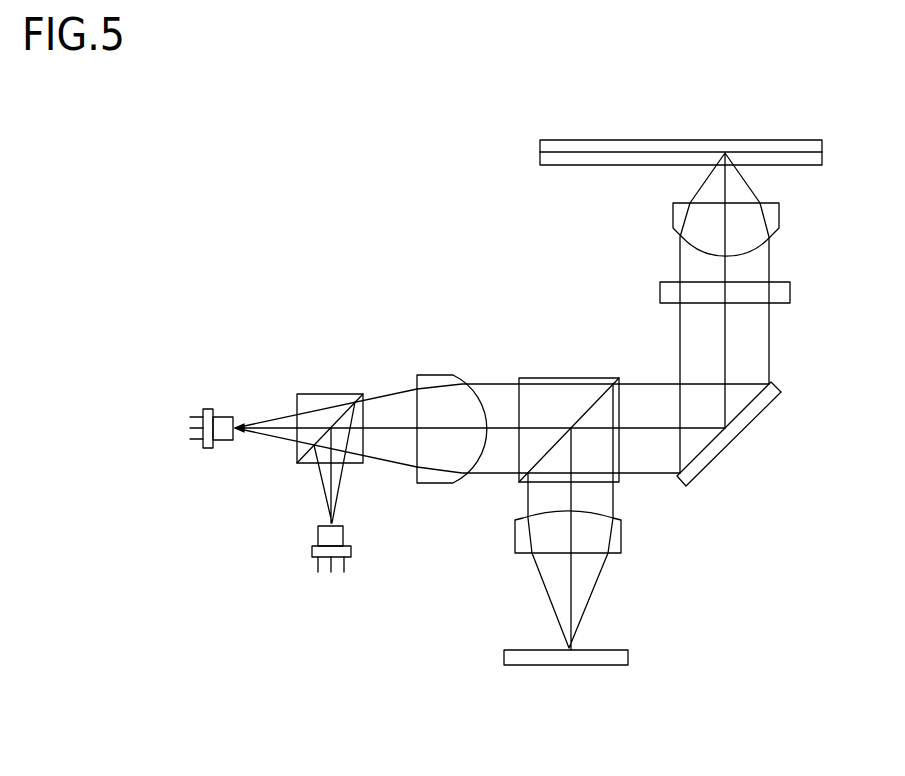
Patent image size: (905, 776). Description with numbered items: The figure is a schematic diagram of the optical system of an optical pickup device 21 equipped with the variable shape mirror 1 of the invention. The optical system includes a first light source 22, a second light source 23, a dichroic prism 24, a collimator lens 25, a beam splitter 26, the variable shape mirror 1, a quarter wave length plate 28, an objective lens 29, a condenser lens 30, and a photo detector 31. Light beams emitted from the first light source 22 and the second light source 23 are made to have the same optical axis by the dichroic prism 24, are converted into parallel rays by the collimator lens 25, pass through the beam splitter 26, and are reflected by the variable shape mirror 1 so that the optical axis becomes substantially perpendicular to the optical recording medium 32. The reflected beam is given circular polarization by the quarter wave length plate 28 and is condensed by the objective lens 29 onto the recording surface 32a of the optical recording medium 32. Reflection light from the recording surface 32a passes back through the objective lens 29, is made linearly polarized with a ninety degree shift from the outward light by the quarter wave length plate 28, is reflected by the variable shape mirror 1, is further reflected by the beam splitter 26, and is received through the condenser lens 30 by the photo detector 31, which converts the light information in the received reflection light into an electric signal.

The variable shape mirror 1 is at (732, 445).
The optical pickup device 21 is at (447, 257).
The first light source 22 is at (203, 407).
The second light source 23 is at (345, 560).
The dichroic prism 24 is at (334, 394).
The collimator lens 25 is at (440, 375).
The beam splitter 26 is at (572, 378).
The quarter wave length plate 28 is at (782, 304).
The objective lens 29 is at (778, 236).
The condenser lens 30 is at (621, 554).
The photo detector 31 is at (620, 666).
The optical recording medium 32 is at (800, 166).
The recording surface 32a is at (543, 140).